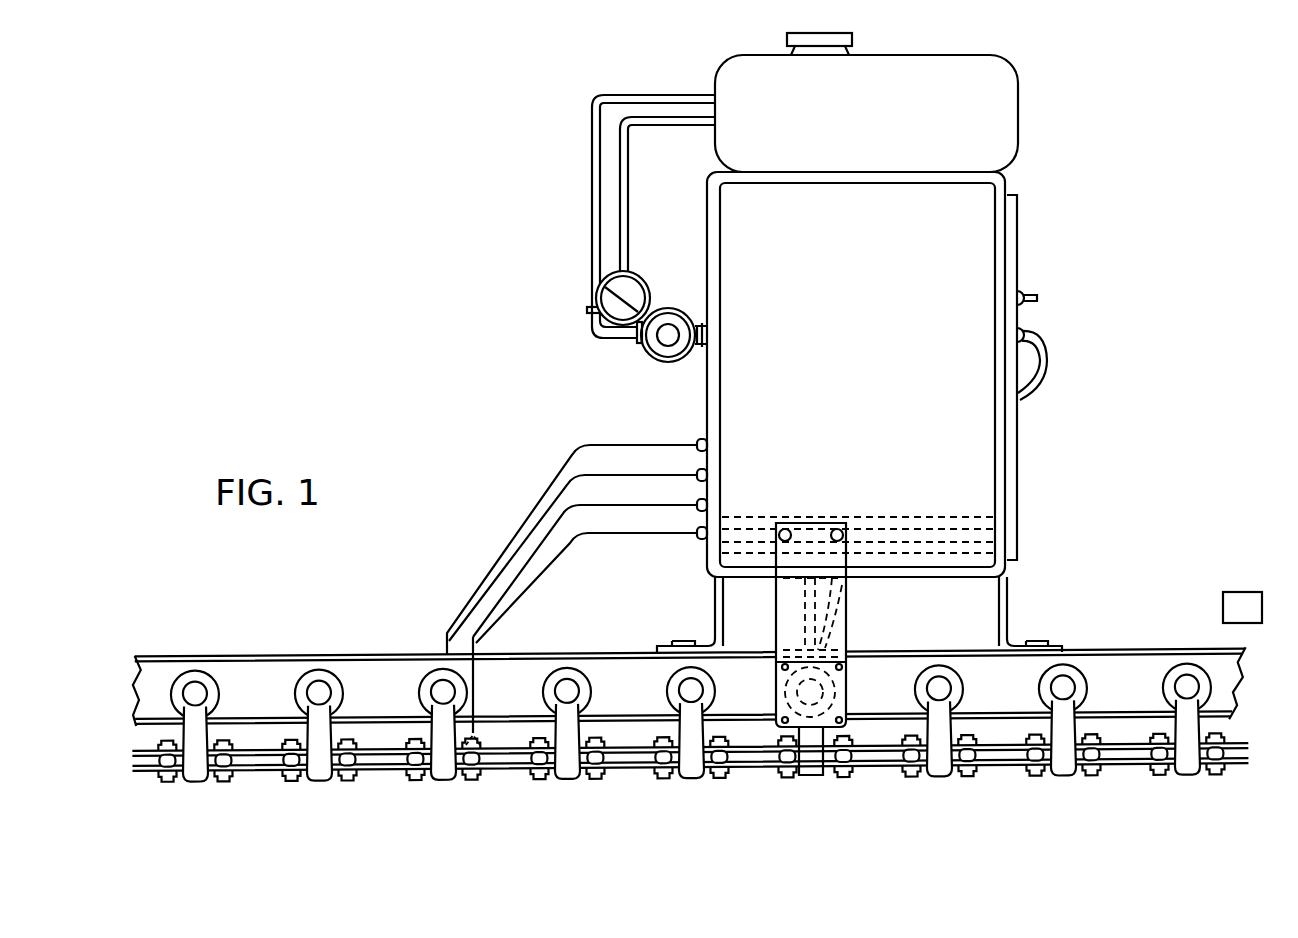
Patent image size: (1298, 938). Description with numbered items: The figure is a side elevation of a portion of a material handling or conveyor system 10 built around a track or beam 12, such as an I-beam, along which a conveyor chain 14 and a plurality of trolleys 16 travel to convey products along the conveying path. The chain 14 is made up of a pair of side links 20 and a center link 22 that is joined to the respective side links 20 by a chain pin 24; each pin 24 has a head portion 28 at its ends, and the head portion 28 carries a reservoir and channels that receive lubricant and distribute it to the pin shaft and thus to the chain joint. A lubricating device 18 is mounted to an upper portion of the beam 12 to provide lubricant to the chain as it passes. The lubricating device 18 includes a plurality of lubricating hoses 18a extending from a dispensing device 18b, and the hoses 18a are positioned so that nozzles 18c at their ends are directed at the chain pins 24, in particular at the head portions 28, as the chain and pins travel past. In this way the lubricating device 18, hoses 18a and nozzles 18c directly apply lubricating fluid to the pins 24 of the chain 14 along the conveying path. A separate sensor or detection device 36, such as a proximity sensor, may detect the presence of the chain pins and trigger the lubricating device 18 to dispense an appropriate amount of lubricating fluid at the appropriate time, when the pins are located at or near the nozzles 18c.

The conveyor system 10 is at (423, 447).
The track or beam 12 is at (268, 652).
The conveyor chain 14 is at (661, 777).
The trolleys 16 is at (347, 688).
The lubricating device 18 is at (801, 404).
The lubricating hoses 18a is at (582, 443).
The dispensing device 18b is at (968, 445).
The nozzles 18c is at (477, 727).
The side links 20 is at (376, 777).
The center link 22 is at (540, 758).
The chain pin 24 is at (168, 782).
The head portion 28 is at (170, 744).
The sensor or detection device 36 is at (1243, 600).